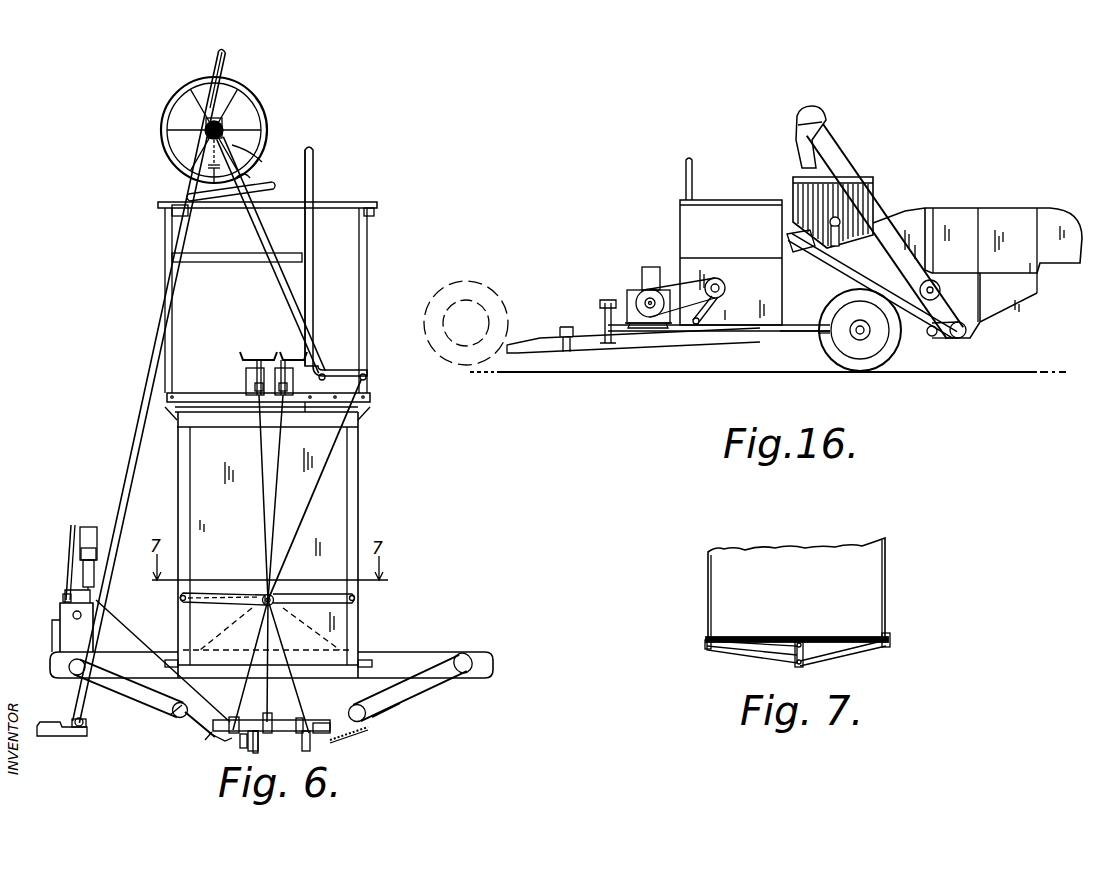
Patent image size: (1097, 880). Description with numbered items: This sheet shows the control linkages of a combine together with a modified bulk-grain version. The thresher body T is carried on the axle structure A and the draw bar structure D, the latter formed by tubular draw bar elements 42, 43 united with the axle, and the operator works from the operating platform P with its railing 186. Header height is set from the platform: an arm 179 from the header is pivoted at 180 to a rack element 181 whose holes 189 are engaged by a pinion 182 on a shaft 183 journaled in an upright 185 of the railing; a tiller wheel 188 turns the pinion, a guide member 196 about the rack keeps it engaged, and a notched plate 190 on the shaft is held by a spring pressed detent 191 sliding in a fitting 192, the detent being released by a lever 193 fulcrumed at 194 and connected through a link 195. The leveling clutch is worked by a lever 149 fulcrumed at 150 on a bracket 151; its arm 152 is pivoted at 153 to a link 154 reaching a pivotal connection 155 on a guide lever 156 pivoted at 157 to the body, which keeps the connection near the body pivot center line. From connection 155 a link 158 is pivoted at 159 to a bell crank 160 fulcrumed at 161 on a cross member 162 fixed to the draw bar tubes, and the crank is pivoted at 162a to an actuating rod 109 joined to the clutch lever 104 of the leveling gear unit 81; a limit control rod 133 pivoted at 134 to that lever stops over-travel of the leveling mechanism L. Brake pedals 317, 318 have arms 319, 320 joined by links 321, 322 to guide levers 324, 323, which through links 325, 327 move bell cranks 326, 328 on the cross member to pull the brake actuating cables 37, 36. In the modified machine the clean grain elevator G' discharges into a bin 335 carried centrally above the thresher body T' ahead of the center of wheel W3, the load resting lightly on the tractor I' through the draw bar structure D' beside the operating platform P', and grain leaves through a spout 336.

In FIG. 6, the brake actuating cable 36 is at (363, 727).
In FIG. 6, the brake actuating cable 37 is at (170, 720).
In FIG. 6, the tubular draw bar element 42 is at (420, 688).
In FIG. 6, the tubular draw bar element 43 is at (140, 697).
In FIG. 6, the jack housing 81 is at (49, 622).
In FIG. 6, the lever 104 is at (79, 556).
In FIG. 6, the actuating rod 109 is at (176, 708).
In FIG. 6, the limit control rod 133 is at (72, 531).
In FIG. 6, the pivot 134 is at (74, 562).
In FIG. 6, the lever 149 is at (313, 200).
In FIG. 6, the fulcrum 150 is at (322, 370).
In FIG. 6, the bracket 151 is at (323, 392).
In FIG. 6, the arm 152 is at (335, 372).
In FIG. 6, the pivot 153 is at (368, 376).
In FIG. 6, the link 154 is at (330, 458).
In FIG. 6, the pivotal connection 155 is at (274, 597).
In FIG. 7, the pivotal connection 155 is at (800, 668).
In FIG. 6, the guide lever 156 is at (332, 603).
In FIG. 7, the guide lever 156 is at (840, 652).
In FIG. 6, the pivot 157 is at (357, 598).
In FIG. 7, the pivot 157 is at (888, 647).
In FIG. 6, the link 158 is at (270, 718).
In FIG. 6, the pivot 159 is at (259, 740).
In FIG. 6, the bell crank 160 is at (280, 740).
In FIG. 6, the fulcrum 161 is at (252, 719).
In FIG. 6, the cross member 162 is at (312, 740).
In FIG. 6, the pivot 162a is at (246, 752).
In FIG. 6, the arm 179 is at (52, 735).
In FIG. 6, the pivotal connection 180 is at (88, 733).
In FIG. 6, the rack element 181 is at (128, 512).
In FIG. 6, the pinion 182 is at (236, 118).
In FIG. 6, the shaft 183 is at (230, 128).
In FIG. 6, the upright 185 is at (165, 232).
In FIG. 6, the railing 186 is at (357, 199).
In FIG. 6, the tiller wheel 188 is at (232, 136).
In FIG. 6, the holes 189 is at (208, 148).
In FIG. 6, the notched plate 190 is at (226, 92).
In FIG. 6, the spring pressed detent 191 is at (263, 165).
In FIG. 6, the fitting 192 is at (212, 162).
In FIG. 6, the lever 193 is at (216, 197).
In FIG. 6, the fulcrum 194 is at (176, 212).
In FIG. 6, the link 195 is at (212, 205).
In FIG. 6, the guide member 196 is at (168, 128).
In FIG. 6, the brake pedal 317 is at (255, 352).
In FIG. 6, the brake pedal 318 is at (292, 352).
In FIG. 6, the arm 319 is at (250, 385).
In FIG. 6, the arm 320 is at (270, 369).
In FIG. 6, the link 321 is at (263, 498).
In FIG. 6, the link 322 is at (272, 512).
In FIG. 6, the guide lever 323 is at (247, 596).
In FIG. 7, the guide lever 323 is at (777, 648).
In FIG. 6, the guide lever 324 is at (228, 599).
In FIG. 7, the guide lever 324 is at (752, 652).
In FIG. 6, the link 325 is at (256, 644).
In FIG. 6, the bell crank 326 is at (217, 743).
In FIG. 6, the link 327 is at (303, 707).
In FIG. 6, the bell crank 328 is at (307, 720).
In FIG. 16, the bin 335 is at (792, 185).
In FIG. 16, the spout 336 is at (808, 190).
In FIG. 6, the axle structure A is at (403, 650).
In FIG. 6, the draw bar structure D is at (410, 722).
In FIG. 6, the mechanism L is at (94, 545).
In FIG. 6, the operating platform P is at (268, 366).
In FIG. 6, the thresher body T is at (275, 542).
In FIG. 7, the thresher body T is at (813, 590).
In FIG. 16, the tractor I' is at (469, 323).
In FIG. 16, the draw bar structure D' is at (633, 330).
In FIG. 16, the operating platform P' is at (703, 264).
In FIG. 16, the clean grain elevator G' is at (876, 222).
In FIG. 16, the thresher body T' is at (977, 257).
In FIG. 16, the wheel W3 is at (898, 346).